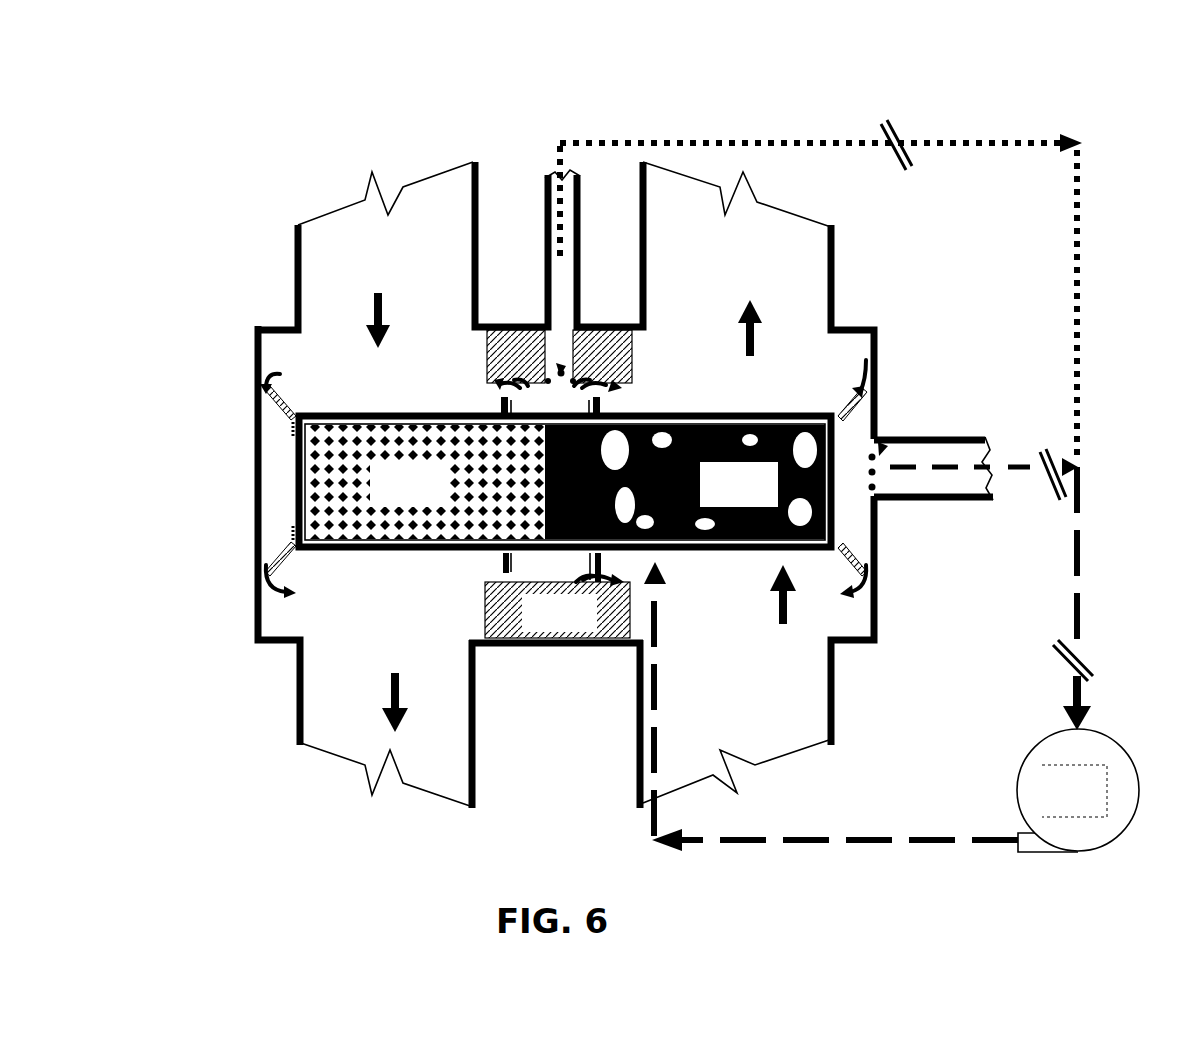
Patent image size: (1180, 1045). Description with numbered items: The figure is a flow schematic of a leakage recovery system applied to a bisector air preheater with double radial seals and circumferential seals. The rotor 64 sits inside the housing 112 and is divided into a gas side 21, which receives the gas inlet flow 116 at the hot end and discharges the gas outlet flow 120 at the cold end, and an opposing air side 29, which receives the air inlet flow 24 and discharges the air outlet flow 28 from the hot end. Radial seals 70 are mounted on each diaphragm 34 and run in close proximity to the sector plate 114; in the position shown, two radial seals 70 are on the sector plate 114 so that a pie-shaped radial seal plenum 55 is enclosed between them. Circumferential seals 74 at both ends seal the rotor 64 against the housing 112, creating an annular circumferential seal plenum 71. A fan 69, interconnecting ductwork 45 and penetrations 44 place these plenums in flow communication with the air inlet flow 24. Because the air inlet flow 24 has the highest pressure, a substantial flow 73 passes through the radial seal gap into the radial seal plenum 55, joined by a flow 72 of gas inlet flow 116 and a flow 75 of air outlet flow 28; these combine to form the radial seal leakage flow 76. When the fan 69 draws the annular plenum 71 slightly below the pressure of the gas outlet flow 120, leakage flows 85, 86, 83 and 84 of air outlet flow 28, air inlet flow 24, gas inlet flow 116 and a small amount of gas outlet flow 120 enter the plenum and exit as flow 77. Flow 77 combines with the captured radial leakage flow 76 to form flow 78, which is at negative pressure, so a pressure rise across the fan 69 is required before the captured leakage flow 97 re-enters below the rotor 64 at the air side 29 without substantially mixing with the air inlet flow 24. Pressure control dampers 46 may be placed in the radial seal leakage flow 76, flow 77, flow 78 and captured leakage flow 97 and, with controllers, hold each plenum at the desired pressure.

The gas side 21 is at (425, 482).
The air inlet flow 24 is at (783, 614).
The air outlet flow 28 is at (750, 311).
The air side 29 is at (685, 482).
The diaphragm 34 is at (498, 408).
The penetrations 44 is at (562, 372).
The interconnecting ductwork 45 is at (540, 210).
The pressure control dampers 46 is at (905, 122).
The radial seal plenum 55 is at (551, 487).
The rotor 64 is at (296, 510).
The fan 69 is at (1078, 790).
The radial seals 70 is at (603, 405).
The circumferential seal plenum 71 is at (568, 478).
The flow 72 is at (492, 383).
The flow 73 is at (630, 392).
The circumferential seals 74 is at (282, 548).
The flow 75 is at (622, 582).
The radial seal leakage flow 76 is at (821, 279).
The flow 77 is at (1018, 474).
The flow 78 is at (1098, 598).
The leakage flow 83 is at (285, 377).
The leakage flow 84 is at (290, 597).
The leakage flow 85 is at (875, 332).
The leakage flow 86 is at (876, 598).
The captured leakage flow 97 is at (831, 706).
The housing 112 is at (256, 355).
The sector plate 114 is at (636, 344).
The gas inlet flow 116 is at (375, 300).
The gas outlet flow 120 is at (393, 682).